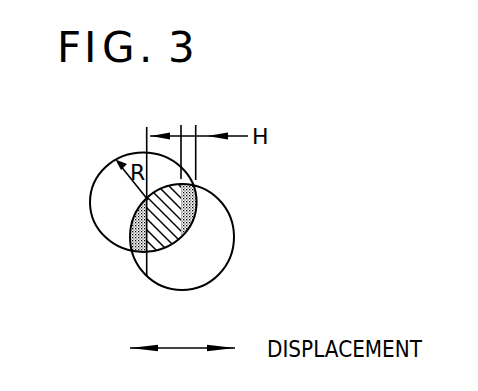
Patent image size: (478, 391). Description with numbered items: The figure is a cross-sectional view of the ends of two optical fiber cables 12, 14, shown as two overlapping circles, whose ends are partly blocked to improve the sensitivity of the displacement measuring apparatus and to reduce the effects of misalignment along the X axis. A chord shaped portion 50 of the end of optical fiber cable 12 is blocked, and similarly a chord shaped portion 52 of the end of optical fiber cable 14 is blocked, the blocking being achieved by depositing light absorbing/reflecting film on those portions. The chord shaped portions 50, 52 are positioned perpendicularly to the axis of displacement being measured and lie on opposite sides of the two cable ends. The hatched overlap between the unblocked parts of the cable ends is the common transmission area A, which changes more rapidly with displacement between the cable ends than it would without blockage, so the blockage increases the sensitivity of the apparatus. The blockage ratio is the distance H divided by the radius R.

The optical fiber cable 12 is at (99, 186).
The optical fiber cable 14 is at (216, 260).
The chord shaped portion 50 is at (193, 210).
The chord shaped portion 52 is at (128, 250).
The transmission area A is at (157, 253).